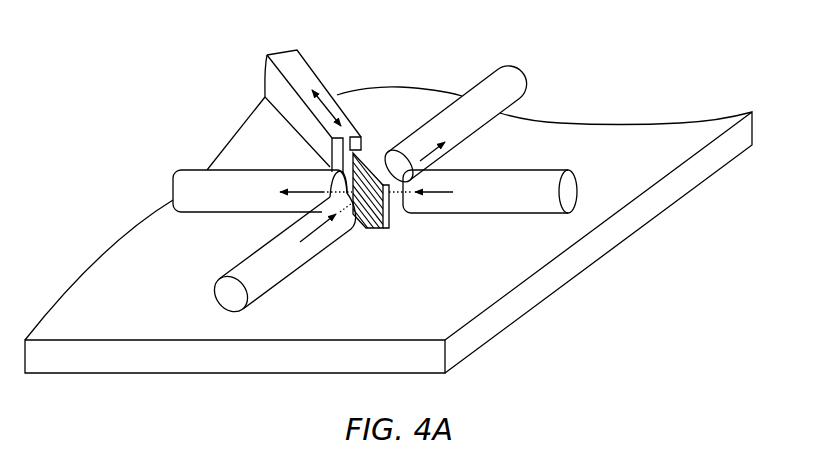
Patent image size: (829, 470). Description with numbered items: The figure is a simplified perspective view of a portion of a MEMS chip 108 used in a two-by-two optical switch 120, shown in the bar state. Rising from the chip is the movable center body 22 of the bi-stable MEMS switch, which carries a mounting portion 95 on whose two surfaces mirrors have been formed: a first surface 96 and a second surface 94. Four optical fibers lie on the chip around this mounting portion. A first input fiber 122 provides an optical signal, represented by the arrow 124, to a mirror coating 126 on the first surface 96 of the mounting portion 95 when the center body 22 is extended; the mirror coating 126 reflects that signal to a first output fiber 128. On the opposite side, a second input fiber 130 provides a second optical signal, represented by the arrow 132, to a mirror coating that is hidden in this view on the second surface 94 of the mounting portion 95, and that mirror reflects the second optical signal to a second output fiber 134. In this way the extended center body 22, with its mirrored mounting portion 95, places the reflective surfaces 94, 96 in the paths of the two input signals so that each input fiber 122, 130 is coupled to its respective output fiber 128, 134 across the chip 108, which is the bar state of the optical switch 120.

The movable center body 22 is at (323, 82).
The second surface of the mounting portion 94 is at (363, 145).
The mounting portion 95 is at (390, 210).
The first surface of the mounting portion 96 is at (330, 167).
The MEMS chip 108 is at (617, 235).
The optical switch 120 is at (767, 88).
The first input fiber 122 is at (258, 282).
The arrow representing the optical signal 124 is at (322, 228).
The mirror coating 126 is at (372, 212).
The first output fiber 128 is at (197, 177).
The second input fiber 130 is at (543, 175).
The arrow representing the second optical signal 132 is at (448, 193).
The second output fiber 134 is at (510, 92).